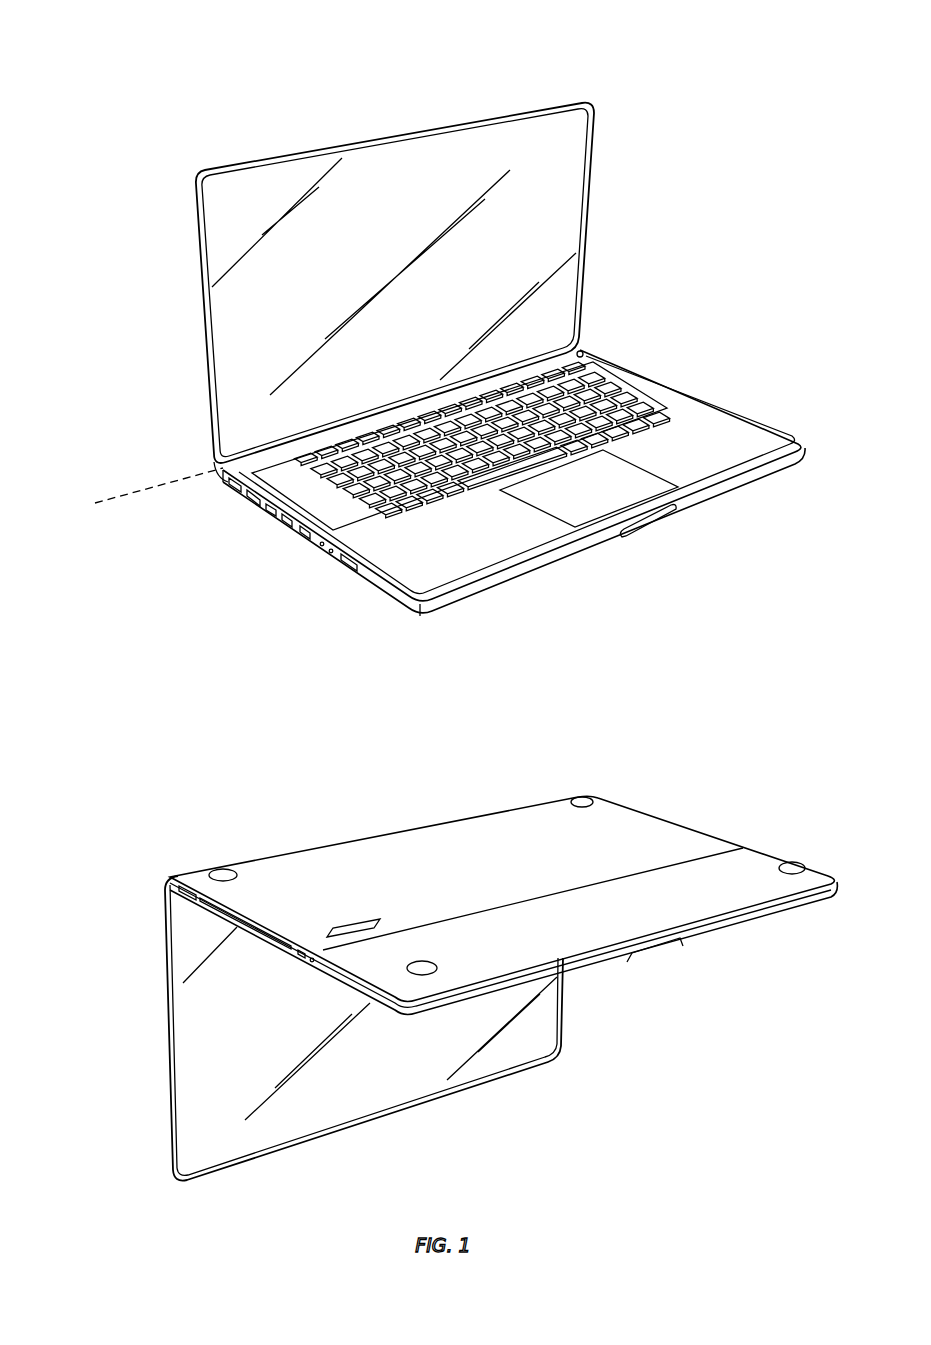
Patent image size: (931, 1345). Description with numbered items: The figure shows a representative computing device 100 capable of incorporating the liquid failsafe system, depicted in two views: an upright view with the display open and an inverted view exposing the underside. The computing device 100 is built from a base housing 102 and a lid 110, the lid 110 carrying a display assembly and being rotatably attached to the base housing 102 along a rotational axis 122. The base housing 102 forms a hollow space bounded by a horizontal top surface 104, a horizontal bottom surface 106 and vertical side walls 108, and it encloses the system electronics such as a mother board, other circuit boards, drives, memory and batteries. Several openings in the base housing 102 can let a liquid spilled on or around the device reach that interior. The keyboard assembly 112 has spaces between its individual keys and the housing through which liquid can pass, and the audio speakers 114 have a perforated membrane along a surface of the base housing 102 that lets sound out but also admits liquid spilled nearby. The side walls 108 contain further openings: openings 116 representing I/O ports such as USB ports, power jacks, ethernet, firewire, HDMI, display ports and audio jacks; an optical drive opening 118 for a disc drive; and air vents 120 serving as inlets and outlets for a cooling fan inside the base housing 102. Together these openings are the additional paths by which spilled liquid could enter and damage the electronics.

The computing device 100 is at (199, 68).
The base housing 102 is at (720, 405).
The top surface 104 is at (767, 443).
The bottom surface 106 is at (652, 830).
The side walls 108 is at (533, 575).
The lid 110 is at (463, 120).
The keyboard assembly 112 is at (576, 362).
The audio speakers 114 is at (637, 378).
The openings 116 is at (265, 508).
The optical drive opening 118 is at (197, 897).
The air vents 120 is at (253, 860).
The rotational axis 122 is at (168, 480).